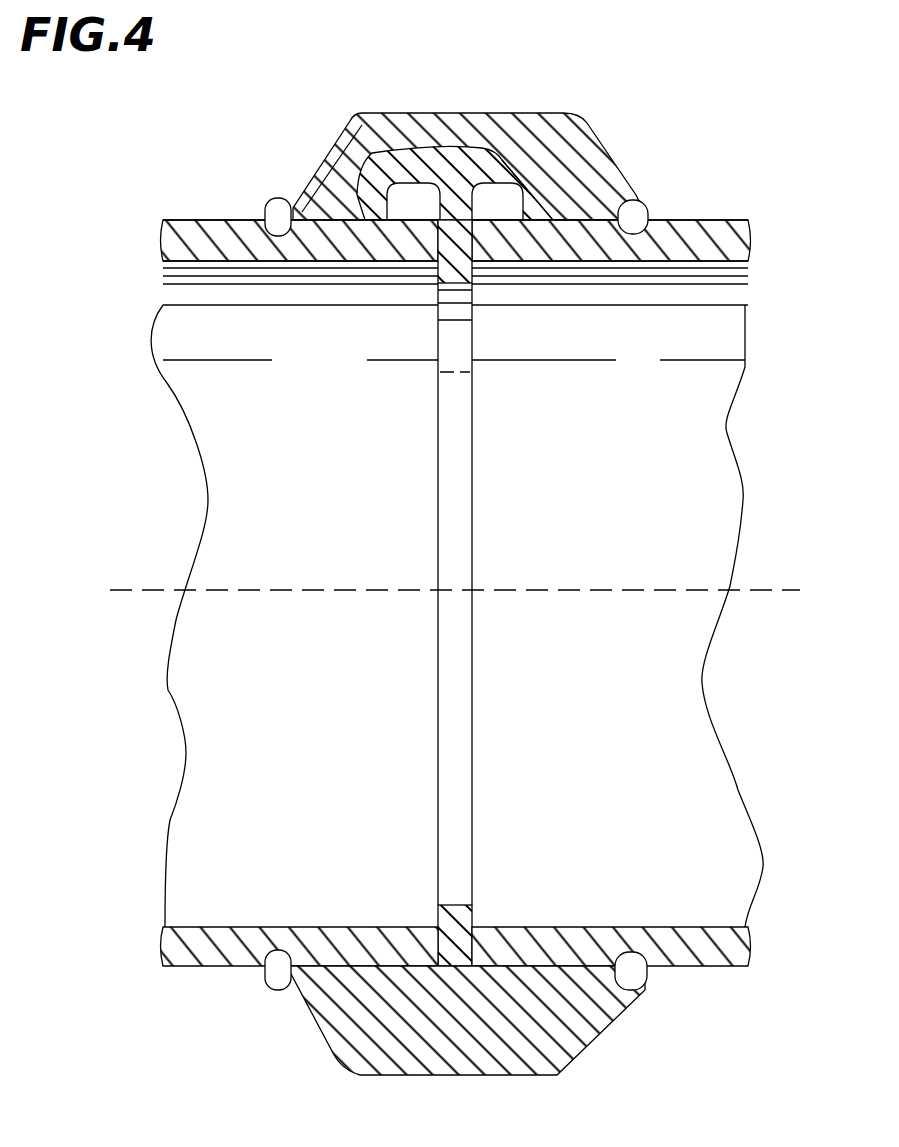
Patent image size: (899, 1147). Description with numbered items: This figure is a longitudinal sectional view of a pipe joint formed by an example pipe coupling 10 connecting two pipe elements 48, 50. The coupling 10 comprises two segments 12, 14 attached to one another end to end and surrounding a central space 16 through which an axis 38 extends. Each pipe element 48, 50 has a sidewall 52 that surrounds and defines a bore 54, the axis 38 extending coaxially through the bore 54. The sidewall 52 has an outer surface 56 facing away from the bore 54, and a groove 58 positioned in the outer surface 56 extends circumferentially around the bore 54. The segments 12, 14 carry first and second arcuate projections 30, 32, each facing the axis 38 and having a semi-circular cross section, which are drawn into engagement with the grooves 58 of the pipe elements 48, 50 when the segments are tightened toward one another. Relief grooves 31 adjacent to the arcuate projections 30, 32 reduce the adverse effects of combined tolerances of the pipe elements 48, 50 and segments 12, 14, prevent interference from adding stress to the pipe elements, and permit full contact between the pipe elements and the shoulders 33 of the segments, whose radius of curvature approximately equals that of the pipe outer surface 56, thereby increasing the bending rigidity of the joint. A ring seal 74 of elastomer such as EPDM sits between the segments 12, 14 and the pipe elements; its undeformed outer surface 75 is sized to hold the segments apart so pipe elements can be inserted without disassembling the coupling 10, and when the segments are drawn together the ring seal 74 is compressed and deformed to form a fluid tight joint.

The pipe coupling 10 is at (657, 155).
The segment 12 is at (580, 1050).
The segment 14 is at (588, 132).
The central space 16 is at (565, 539).
The first arcuate projection 30 is at (278, 200).
The relief grooves 31 is at (285, 990).
The second arcuate projection 32 is at (650, 210).
The shoulders 33 is at (345, 152).
The axis 38 is at (232, 587).
The pipe element 48 is at (210, 968).
The pipe element 50 is at (745, 960).
The sidewall 52 is at (175, 232).
The bore 54 is at (373, 659).
The outer surface 56 is at (210, 220).
The groove 58 is at (283, 243).
The ring seal 74 is at (450, 158).
The outer surface 75 is at (532, 158).